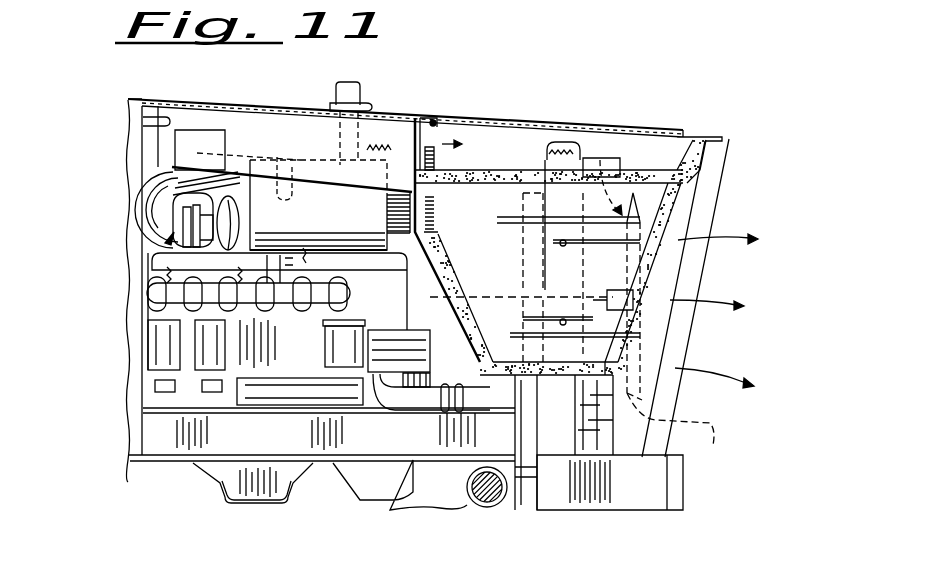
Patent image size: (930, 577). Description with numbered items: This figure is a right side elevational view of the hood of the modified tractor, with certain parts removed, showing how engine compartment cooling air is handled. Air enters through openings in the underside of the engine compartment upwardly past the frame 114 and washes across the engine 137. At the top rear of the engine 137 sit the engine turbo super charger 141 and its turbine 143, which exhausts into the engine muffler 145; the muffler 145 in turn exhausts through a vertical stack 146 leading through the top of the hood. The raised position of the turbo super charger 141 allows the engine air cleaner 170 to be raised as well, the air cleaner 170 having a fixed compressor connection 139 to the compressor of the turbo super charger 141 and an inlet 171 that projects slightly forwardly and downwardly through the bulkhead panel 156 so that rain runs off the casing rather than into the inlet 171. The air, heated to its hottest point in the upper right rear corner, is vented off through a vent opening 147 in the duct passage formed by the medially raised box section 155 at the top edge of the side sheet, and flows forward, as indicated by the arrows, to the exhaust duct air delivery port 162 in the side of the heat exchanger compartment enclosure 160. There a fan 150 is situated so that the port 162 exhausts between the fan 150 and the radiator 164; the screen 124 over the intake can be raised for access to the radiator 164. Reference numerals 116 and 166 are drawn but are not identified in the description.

The frame 114 is at (330, 437).
The air outlet chute 116 is at (770, 212).
The screen 124 is at (482, 117).
The engine 137 is at (158, 318).
The compressor connection 139 is at (279, 157).
The turbo super charger 141 is at (175, 200).
The turbo super charger turbine 143 is at (267, 198).
The engine muffler 145 is at (190, 233).
The vertical stack 146 is at (333, 93).
The vent opening 147 is at (179, 160).
The fan 150 is at (680, 433).
The medially raised box section 155 is at (228, 125).
The bulkhead panel 156 is at (432, 266).
The heat exchanger compartment enclosure 160 is at (525, 169).
The exhaust duct air delivery port 162 is at (608, 160).
The radiator 164 is at (566, 456).
The temperature sensor 166 is at (414, 158).
The engine air cleaner 170 is at (440, 140).
The inlet 171 is at (435, 205).